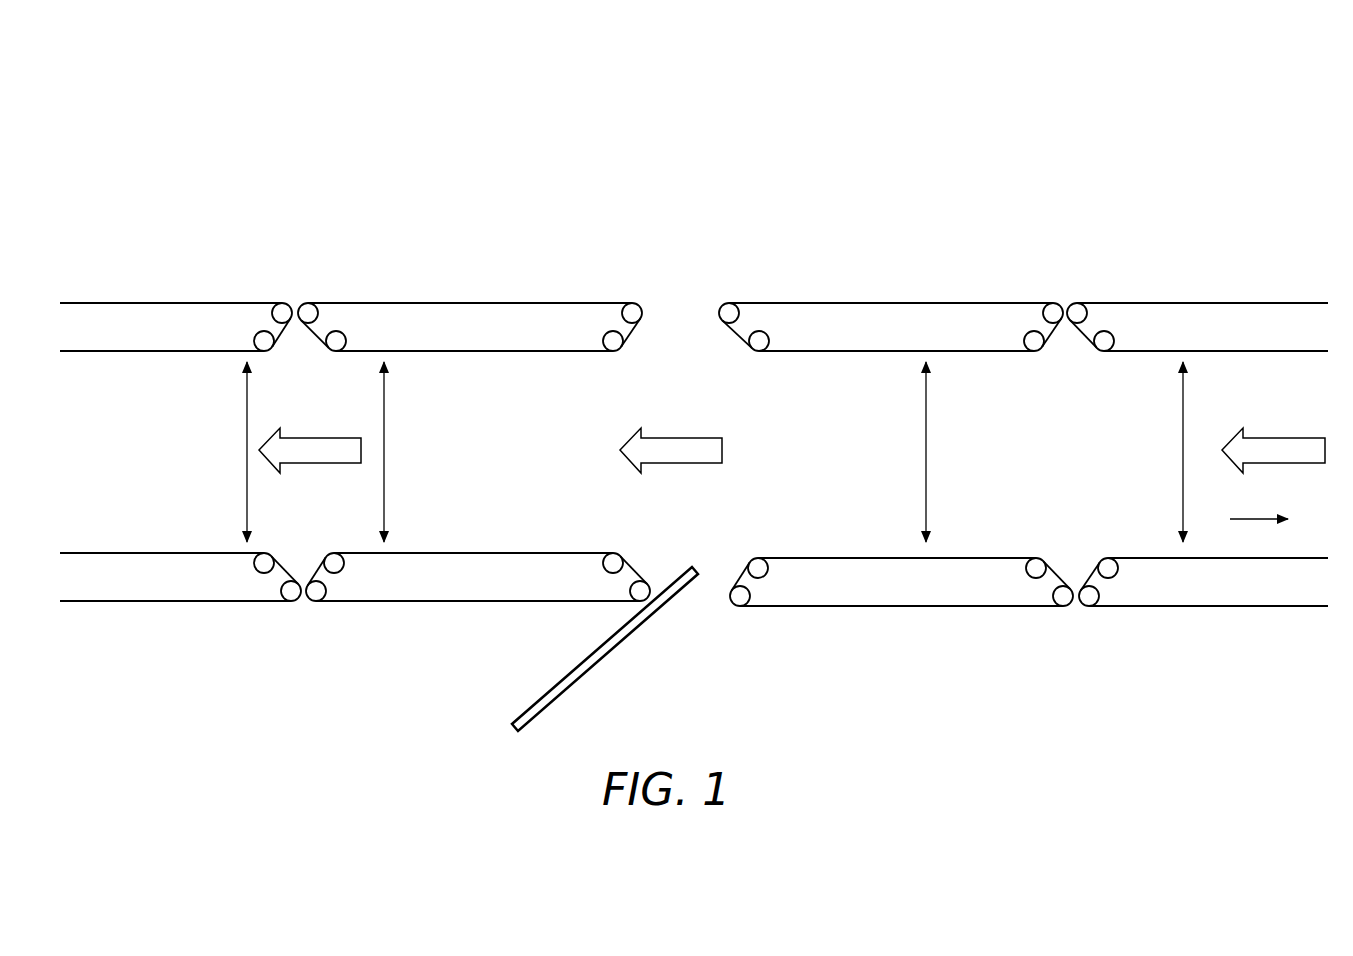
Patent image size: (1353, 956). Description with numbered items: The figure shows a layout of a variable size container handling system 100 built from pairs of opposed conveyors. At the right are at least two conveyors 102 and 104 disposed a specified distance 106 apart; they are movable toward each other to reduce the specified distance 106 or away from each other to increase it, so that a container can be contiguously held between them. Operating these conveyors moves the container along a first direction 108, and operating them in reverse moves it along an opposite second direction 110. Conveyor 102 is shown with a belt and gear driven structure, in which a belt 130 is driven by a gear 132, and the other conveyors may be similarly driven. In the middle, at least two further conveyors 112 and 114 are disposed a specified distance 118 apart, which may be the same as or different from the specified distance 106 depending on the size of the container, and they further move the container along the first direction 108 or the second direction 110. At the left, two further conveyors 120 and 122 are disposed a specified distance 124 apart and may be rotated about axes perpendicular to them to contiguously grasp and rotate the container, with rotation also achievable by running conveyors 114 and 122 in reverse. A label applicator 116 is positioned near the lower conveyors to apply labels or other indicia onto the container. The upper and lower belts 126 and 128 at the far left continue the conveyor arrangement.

The variable size container handling system 100 is at (442, 203).
The conveyor 102 is at (1170, 300).
The conveyor 104 is at (1128, 610).
The specified distance 106 is at (1187, 427).
The first direction 108 is at (1232, 472).
The second direction 110 is at (1255, 533).
The further conveyor 112 is at (820, 300).
The further conveyor 114 is at (810, 610).
The label applicator 116 is at (602, 670).
The specified distance 118 is at (932, 450).
The further conveyor 120 is at (357, 300).
The further conveyor 122 is at (383, 603).
The specified distance 124 is at (390, 443).
The upper conveyor 126 is at (170, 300).
The lower conveyor 128 is at (203, 603).
The belt 130 is at (1285, 300).
The gear 132 is at (1075, 303).